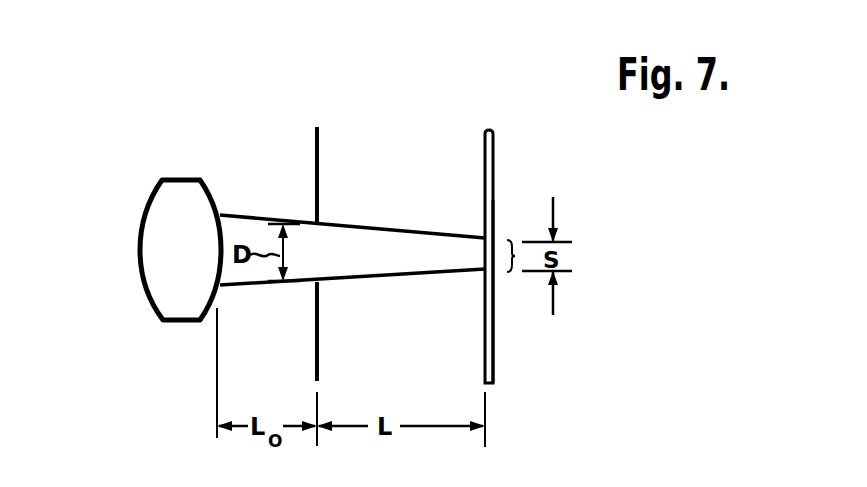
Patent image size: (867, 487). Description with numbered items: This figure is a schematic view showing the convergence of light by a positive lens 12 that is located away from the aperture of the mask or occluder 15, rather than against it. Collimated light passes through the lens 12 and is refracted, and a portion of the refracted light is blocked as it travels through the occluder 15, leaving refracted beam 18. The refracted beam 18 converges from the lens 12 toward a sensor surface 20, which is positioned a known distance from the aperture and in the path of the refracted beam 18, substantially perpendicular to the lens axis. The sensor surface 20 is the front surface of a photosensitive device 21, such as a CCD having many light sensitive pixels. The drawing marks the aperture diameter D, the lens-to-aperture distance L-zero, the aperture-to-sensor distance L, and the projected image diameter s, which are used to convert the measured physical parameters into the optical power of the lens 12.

The lens 12 is at (178, 179).
The occluder 15 is at (320, 175).
The refracted beam 18 is at (359, 280).
The sensor surface 20 is at (483, 151).
The photosensitive device 21 is at (495, 366).